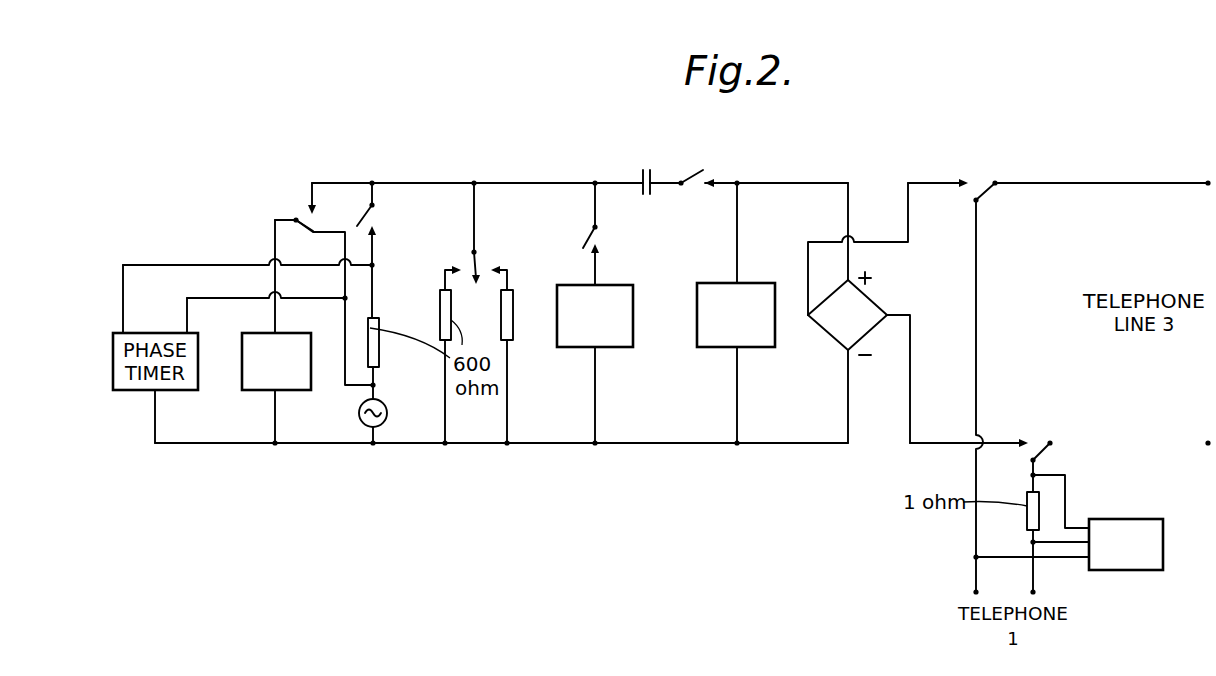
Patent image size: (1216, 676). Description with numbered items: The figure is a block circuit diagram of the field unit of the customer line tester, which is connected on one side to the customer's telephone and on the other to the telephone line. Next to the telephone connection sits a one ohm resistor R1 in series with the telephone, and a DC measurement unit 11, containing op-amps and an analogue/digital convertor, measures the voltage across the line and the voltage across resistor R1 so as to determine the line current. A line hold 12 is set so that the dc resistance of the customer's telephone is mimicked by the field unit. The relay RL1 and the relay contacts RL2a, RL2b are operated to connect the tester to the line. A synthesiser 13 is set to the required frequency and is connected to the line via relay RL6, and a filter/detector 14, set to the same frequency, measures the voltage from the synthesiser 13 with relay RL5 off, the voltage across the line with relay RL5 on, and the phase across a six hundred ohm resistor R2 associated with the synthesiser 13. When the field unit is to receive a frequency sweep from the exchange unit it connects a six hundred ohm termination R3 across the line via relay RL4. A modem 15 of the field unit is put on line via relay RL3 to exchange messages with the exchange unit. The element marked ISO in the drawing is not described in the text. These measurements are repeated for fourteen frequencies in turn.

The DC measurement unit 11 is at (1115, 556).
The line hold 12 is at (725, 324).
The synthesiser 13 is at (358, 413).
The filter/detector 14 is at (266, 372).
The modem 15 is at (584, 324).
The 1 ohm resistor R1 is at (1027, 514).
The 600 ohm resistor R2 is at (380, 355).
The 600 ohm termination R3 is at (440, 309).
The isolation resistor ISO is at (513, 325).
The relay RL1 is at (693, 171).
The relay RL2a is at (1040, 452).
The relay RL2b is at (979, 194).
The relay RL3 is at (596, 238).
The relay RL4 is at (480, 256).
The relay RL5 is at (302, 215).
The relay RL6 is at (366, 215).